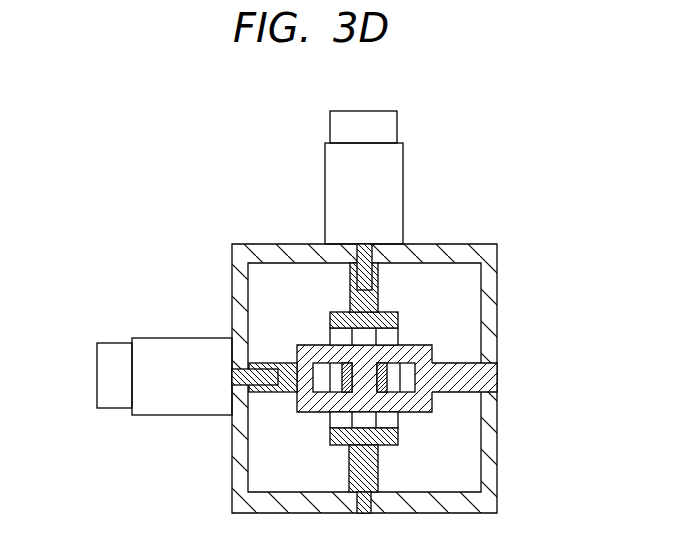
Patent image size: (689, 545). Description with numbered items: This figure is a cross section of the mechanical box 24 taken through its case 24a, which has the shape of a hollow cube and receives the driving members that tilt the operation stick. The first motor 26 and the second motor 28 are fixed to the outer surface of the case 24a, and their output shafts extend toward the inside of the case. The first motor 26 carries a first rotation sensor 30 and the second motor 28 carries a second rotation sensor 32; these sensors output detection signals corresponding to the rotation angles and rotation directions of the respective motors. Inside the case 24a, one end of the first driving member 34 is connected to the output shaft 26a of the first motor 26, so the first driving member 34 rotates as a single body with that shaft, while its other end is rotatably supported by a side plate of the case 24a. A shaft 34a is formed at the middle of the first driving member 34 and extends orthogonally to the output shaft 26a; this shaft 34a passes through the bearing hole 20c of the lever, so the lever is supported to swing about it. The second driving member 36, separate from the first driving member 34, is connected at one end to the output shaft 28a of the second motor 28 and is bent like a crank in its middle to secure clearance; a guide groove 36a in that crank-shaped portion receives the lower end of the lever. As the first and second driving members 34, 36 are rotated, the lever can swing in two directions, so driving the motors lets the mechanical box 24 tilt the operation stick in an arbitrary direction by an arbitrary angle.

The mechanical box 24 is at (183, 152).
The case 24a is at (492, 268).
The first motor 26 is at (192, 348).
The output shaft of the first motor 26a is at (258, 370).
The second motor 28 is at (388, 182).
The output shaft of the second motor 28a is at (367, 272).
The first rotation sensor 30 is at (113, 353).
The second rotation sensor 32 is at (388, 125).
The first driving member 34 is at (305, 414).
The shaft 34a is at (418, 383).
The second driving member 36 is at (379, 467).
The guide groove 36a is at (368, 420).
The bearing hole 20c is at (414, 378).